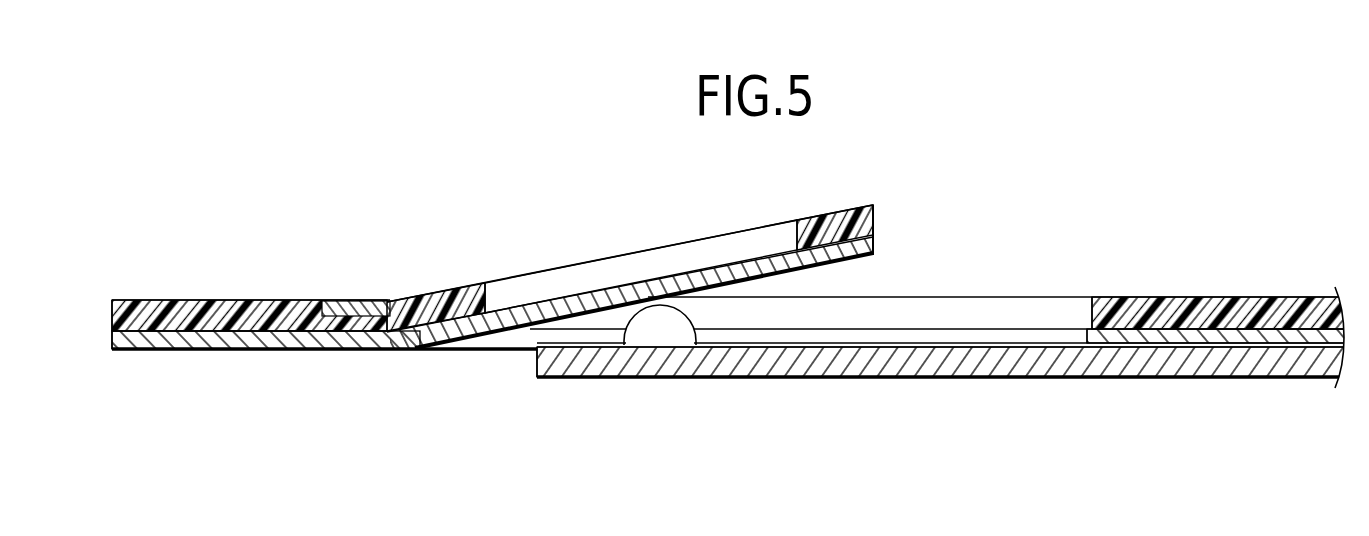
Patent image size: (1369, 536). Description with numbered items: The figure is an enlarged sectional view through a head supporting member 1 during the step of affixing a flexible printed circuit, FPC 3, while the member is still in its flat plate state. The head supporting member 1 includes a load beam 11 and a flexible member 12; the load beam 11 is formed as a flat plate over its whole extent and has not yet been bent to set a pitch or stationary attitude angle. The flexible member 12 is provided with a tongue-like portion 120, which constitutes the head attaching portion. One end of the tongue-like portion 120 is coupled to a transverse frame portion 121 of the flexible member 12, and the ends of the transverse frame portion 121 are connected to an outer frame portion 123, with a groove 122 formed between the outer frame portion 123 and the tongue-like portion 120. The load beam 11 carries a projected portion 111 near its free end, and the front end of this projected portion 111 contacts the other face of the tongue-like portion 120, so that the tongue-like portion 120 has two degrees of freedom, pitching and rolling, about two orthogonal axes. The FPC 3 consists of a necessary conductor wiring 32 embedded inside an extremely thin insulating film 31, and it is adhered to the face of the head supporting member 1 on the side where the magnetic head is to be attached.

The head supporting member 1 is at (888, 338).
The FPC 3 is at (1308, 280).
The load beam 11 is at (1163, 368).
The flexible member 12 is at (453, 309).
The insulating film 31 is at (250, 302).
The conductor wiring 32 is at (352, 302).
The projected portion 111 is at (660, 345).
The tongue-like portion 120 is at (720, 265).
The transverse frame portion 121 is at (112, 340).
The groove 122 is at (1003, 333).
The outer frame portion 123 is at (920, 328).